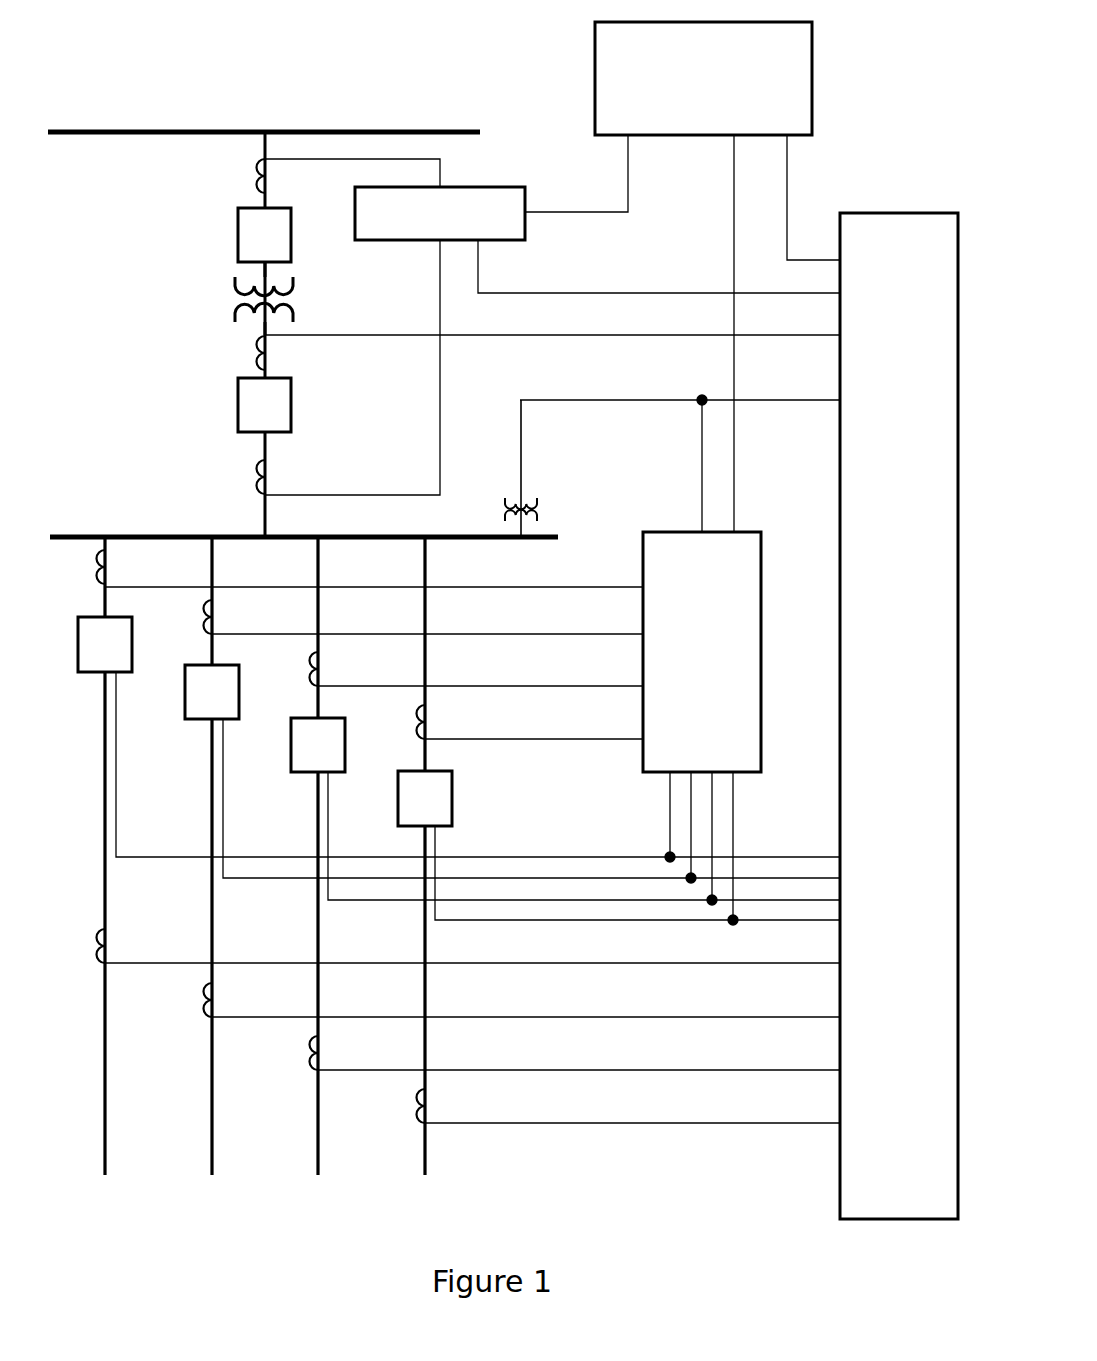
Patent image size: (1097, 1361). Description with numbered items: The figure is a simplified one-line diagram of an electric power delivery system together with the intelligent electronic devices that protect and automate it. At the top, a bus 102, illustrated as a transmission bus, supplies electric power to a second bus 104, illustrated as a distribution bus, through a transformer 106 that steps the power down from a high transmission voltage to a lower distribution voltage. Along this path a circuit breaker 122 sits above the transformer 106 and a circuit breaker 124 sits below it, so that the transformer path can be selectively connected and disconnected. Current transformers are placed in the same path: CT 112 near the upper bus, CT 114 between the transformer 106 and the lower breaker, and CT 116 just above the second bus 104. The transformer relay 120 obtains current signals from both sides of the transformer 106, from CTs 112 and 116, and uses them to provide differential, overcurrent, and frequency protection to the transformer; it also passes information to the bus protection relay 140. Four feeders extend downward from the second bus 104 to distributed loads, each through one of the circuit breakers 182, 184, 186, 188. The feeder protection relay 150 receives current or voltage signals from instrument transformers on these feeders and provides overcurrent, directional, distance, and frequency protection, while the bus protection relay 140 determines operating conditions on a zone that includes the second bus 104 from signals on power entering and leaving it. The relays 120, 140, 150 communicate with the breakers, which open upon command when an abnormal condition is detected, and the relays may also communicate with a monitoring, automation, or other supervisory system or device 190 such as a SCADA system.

The bus 102 is at (122, 134).
The second bus 104 is at (80, 535).
The transformer 106 is at (236, 290).
The CT 112 is at (256, 177).
The current transformer 114 is at (256, 355).
The CT 116 is at (256, 466).
The transformer relay 120 is at (454, 186).
The circuit breaker 122 is at (237, 232).
The circuit breaker 124 is at (237, 403).
The bus protection relay 140 is at (882, 1221).
The feeder protection relay 150 is at (765, 585).
The circuit breaker 182 is at (86, 672).
The circuit breaker 184 is at (193, 721).
The circuit breaker 186 is at (296, 772).
The circuit breaker 188 is at (452, 813).
The monitoring, automation, or other supervisory system or device 190 is at (812, 34).